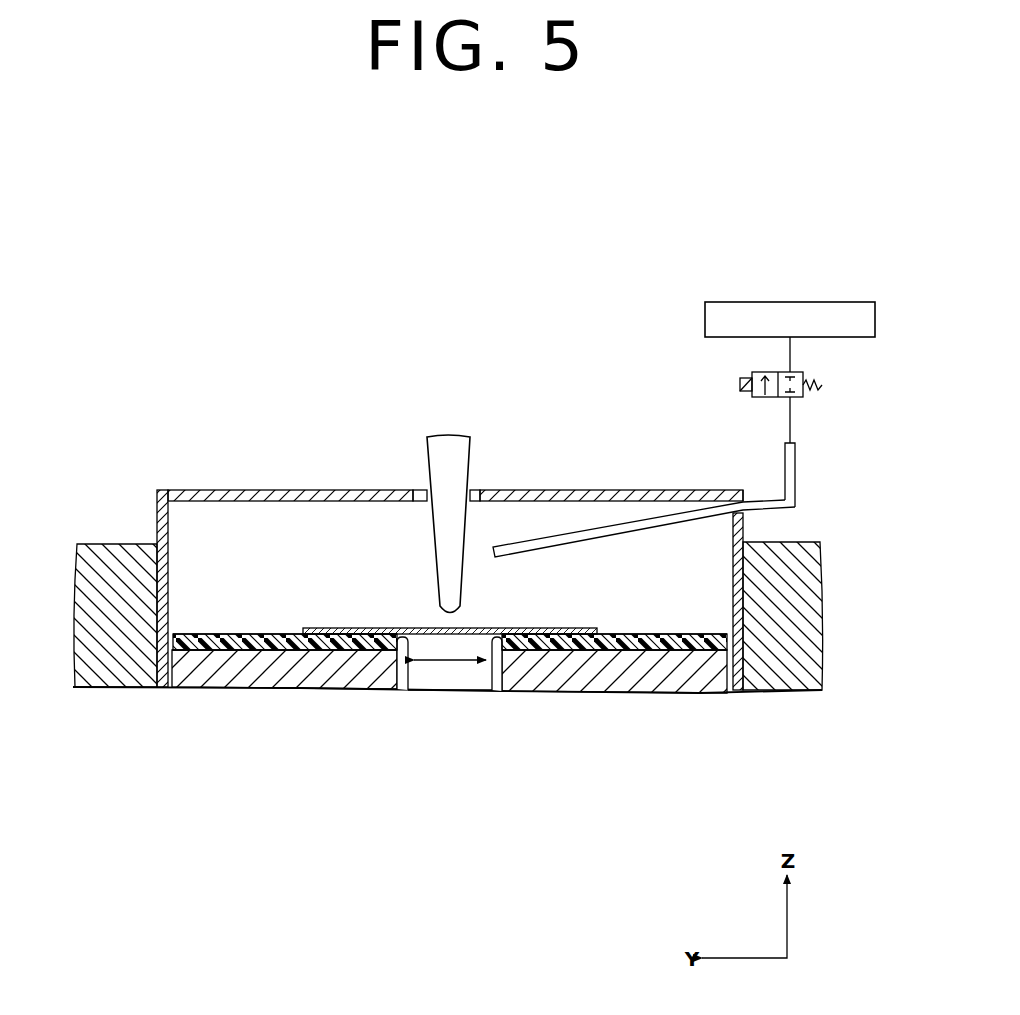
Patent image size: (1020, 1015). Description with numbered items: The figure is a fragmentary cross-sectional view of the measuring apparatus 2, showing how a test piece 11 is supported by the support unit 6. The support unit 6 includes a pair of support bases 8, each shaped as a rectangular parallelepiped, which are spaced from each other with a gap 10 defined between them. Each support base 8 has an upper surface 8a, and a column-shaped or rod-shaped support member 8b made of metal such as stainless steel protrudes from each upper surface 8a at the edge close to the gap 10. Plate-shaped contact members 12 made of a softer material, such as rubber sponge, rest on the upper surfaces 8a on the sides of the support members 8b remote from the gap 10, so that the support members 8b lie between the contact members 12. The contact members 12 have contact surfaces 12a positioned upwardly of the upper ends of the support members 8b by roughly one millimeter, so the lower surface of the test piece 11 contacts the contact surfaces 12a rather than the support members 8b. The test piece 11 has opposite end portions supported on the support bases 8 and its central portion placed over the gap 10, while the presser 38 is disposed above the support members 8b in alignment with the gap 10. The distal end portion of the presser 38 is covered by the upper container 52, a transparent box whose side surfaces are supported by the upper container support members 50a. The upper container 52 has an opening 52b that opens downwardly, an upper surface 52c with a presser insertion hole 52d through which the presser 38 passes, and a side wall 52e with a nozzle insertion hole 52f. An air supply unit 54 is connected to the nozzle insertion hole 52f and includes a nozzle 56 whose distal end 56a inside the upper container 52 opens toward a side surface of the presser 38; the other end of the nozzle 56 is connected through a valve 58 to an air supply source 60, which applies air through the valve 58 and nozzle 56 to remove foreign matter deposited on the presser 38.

The measuring apparatus 2 is at (265, 240).
The support unit 6 is at (170, 714).
The support bases 8 is at (240, 670).
The upper surfaces 8a is at (274, 636).
The support members 8b is at (398, 681).
The gap 10 is at (455, 666).
The test piece 11 is at (360, 627).
The contact members 12 is at (200, 644).
The contact surfaces 12a is at (250, 635).
The presser 38 is at (447, 442).
The upper container support members 50a is at (95, 556).
The upper container 52 is at (154, 487).
The opening 52b is at (430, 676).
The upper surface 52c is at (292, 489).
The presser insertion hole 52d is at (479, 491).
The side wall 52e is at (744, 530).
The nozzle insertion hole 52f is at (717, 489).
The air supply unit 54 is at (819, 251).
The nozzle 56 is at (796, 460).
The distal end 56a is at (494, 547).
The valve 58 is at (806, 378).
The air supply source 60 is at (785, 301).